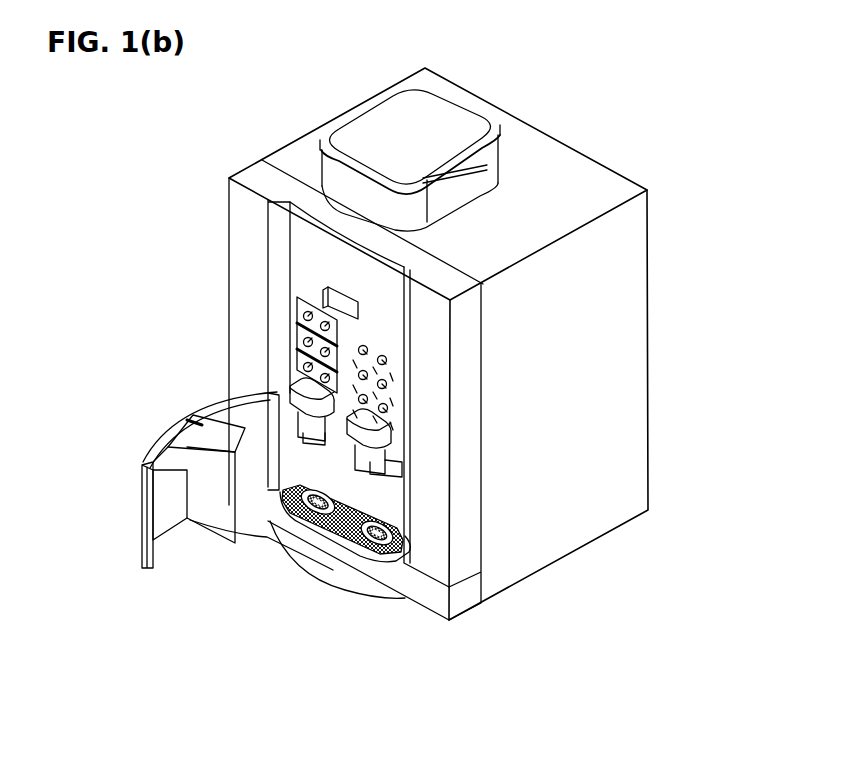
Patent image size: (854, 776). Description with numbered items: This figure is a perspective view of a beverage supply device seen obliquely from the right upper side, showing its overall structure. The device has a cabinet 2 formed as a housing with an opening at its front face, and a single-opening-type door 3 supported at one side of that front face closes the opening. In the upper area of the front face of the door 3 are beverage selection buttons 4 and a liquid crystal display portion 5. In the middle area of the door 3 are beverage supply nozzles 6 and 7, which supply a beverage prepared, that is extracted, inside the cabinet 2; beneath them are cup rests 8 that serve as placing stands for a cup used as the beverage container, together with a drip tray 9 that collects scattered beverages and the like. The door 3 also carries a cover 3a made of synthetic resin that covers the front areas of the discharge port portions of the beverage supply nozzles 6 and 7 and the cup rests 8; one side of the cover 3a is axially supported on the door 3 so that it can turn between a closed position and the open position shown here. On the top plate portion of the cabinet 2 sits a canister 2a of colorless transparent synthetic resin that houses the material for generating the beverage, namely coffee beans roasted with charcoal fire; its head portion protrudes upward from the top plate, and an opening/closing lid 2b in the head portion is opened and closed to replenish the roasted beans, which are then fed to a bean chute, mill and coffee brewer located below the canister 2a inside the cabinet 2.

The cabinet 2 is at (625, 250).
The canister 2a is at (483, 167).
The opening/closing lid 2b is at (460, 123).
The door 3 is at (462, 333).
The cover 3a is at (153, 455).
The beverage selection buttons 4 is at (337, 332).
The liquid crystal display portion 5 is at (328, 296).
The beverage supply nozzle 6 is at (290, 397).
The beverage supply nozzle 7 is at (400, 470).
The cup rests 8 is at (300, 520).
The drip tray 9 is at (340, 546).